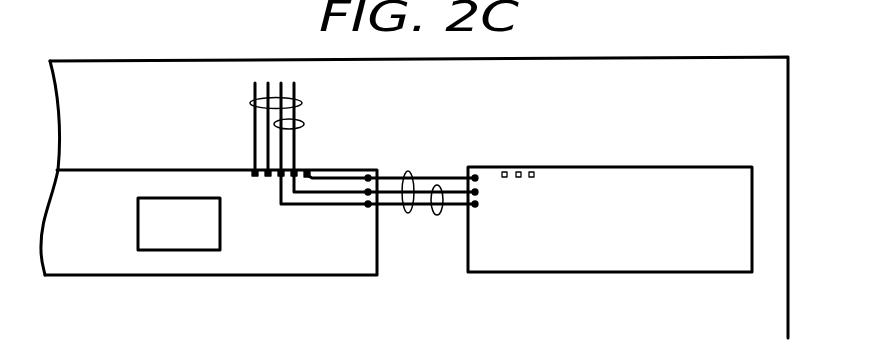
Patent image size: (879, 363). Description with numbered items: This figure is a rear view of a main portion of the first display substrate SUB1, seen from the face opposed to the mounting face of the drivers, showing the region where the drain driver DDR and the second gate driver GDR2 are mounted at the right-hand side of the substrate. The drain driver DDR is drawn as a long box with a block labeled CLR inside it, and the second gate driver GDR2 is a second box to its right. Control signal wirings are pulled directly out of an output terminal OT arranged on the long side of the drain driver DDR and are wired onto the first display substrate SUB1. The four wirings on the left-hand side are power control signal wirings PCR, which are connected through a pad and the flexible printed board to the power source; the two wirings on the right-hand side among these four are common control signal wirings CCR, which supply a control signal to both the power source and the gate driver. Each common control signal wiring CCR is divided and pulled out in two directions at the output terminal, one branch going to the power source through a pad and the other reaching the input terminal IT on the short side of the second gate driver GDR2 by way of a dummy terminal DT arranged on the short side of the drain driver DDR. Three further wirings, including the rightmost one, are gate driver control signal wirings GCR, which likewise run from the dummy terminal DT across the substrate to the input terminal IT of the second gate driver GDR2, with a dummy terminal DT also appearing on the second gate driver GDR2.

The first display substrate SUB1 is at (414, 197).
The drain driver DDR is at (211, 222).
The controller CLR is at (179, 224).
The second gate driver GDR2 is at (610, 219).
The power control signal wiring PCR is at (251, 104).
The common control signal wiring CCR is at (304, 125).
The gate driver control signal wiring GCR is at (412, 170).
The output terminal OT is at (268, 177).
The input terminal IT is at (476, 206).
The dummy terminal DT is at (518, 162).